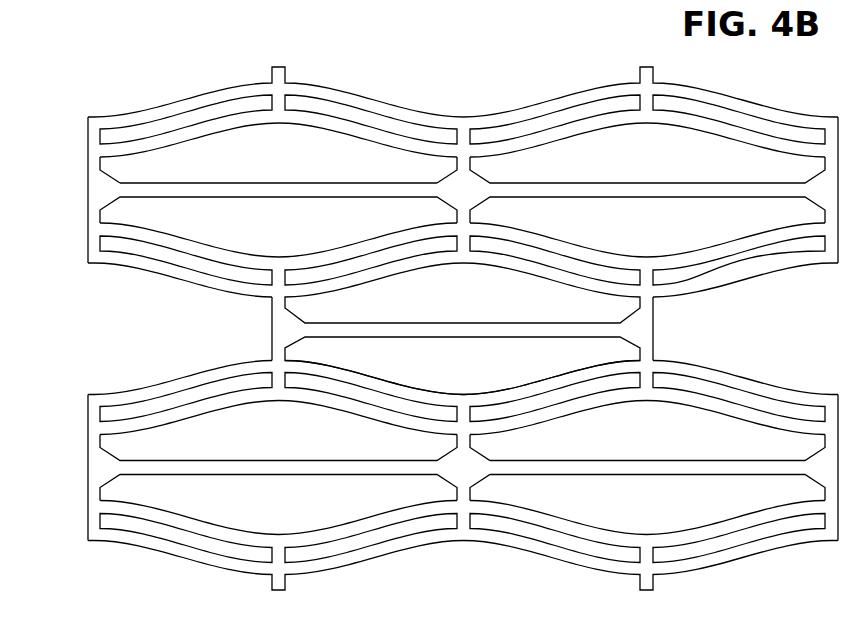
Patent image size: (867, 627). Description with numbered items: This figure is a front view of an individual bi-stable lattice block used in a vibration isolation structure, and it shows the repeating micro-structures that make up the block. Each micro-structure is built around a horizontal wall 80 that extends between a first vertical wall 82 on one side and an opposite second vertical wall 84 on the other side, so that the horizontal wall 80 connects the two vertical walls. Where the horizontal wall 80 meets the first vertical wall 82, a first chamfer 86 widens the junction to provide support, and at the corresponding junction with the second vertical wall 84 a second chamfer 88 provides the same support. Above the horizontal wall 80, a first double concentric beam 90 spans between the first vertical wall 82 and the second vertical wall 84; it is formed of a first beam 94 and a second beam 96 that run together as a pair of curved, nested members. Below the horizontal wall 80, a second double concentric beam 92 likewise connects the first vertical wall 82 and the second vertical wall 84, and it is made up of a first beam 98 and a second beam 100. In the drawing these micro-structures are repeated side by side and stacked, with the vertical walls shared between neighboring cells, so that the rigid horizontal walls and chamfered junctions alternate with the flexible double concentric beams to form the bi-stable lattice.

The horizontal wall 80 is at (358, 183).
The first vertical wall 82 is at (88, 137).
The second vertical wall 84 is at (477, 160).
The first chamfer 86 is at (106, 172).
The second chamfer 88 is at (448, 173).
The first double concentric beam 90 is at (177, 93).
The second double concentric beam 92 is at (148, 273).
The first beam 94 is at (225, 89).
The second beam 96 is at (157, 132).
The first beam 98 is at (240, 293).
The second beam 100 is at (198, 250).